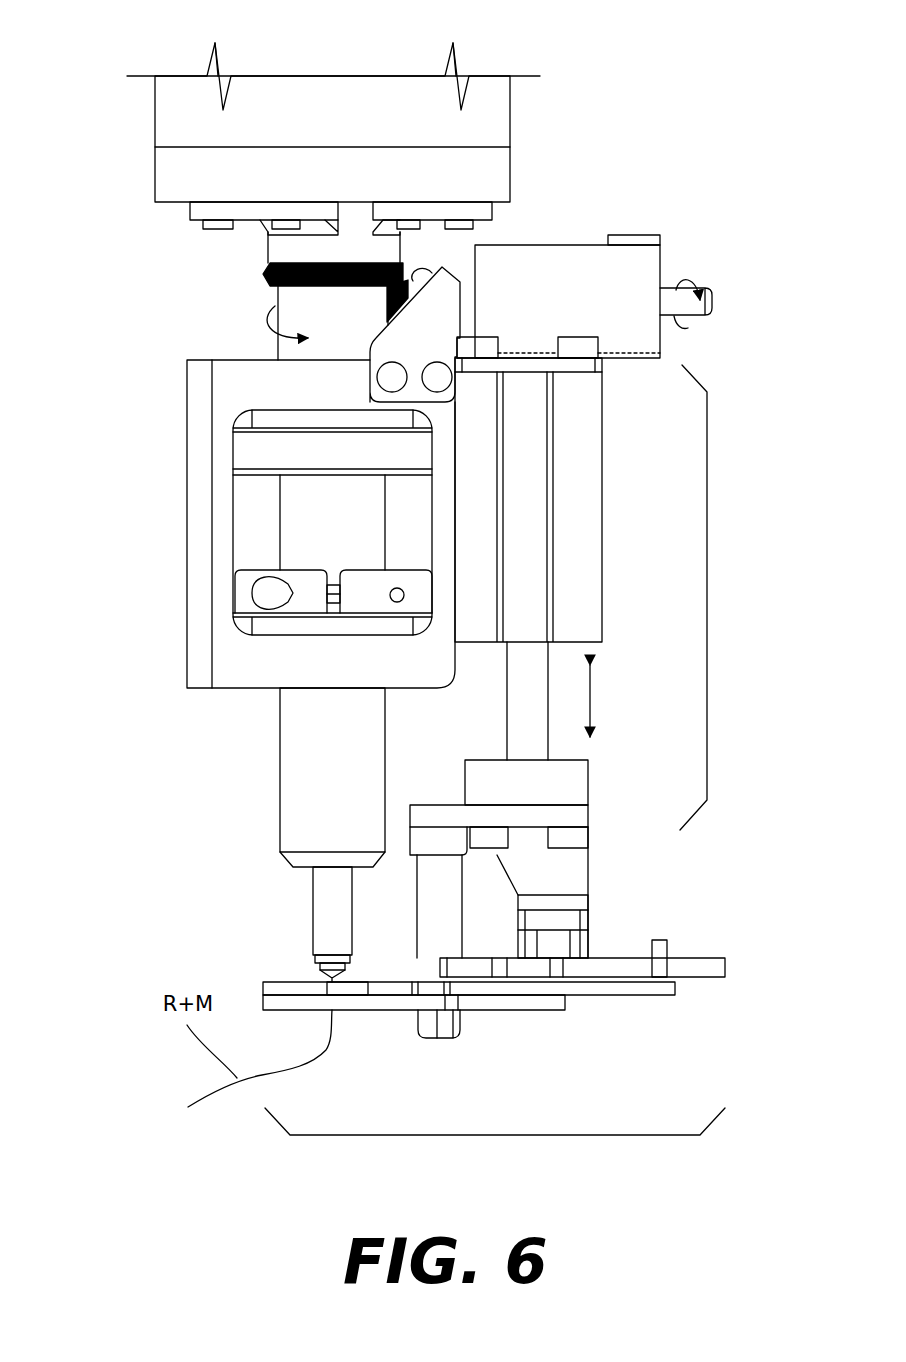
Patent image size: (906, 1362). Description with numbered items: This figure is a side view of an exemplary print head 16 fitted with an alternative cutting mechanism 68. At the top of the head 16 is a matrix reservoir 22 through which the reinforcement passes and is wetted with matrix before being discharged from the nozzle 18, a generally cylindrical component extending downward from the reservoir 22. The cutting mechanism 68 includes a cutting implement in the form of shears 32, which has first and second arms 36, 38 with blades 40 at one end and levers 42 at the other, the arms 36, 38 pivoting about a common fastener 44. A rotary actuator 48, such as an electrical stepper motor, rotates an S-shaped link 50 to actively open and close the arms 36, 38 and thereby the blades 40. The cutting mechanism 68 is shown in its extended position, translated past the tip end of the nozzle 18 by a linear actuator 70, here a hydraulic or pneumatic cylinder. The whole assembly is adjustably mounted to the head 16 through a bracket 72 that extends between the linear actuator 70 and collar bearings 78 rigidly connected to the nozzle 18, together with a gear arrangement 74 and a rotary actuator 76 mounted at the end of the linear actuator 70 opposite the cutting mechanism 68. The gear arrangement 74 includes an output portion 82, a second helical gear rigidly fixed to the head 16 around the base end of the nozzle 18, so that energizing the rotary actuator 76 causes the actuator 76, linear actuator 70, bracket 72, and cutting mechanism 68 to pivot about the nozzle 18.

The head 16 is at (136, 62).
The matrix reservoir 22 is at (348, 115).
The gear arrangement 74 is at (241, 287).
The output portion 82 is at (303, 286).
The rotary actuator 76 is at (555, 309).
The collar bearings 78 is at (303, 452).
The bracket 72 is at (391, 674).
The linear actuator 70 is at (707, 593).
The rotary actuator 48 is at (588, 877).
The link 50 is at (610, 958).
The nozzle 18 is at (313, 895).
The blade 40 is at (350, 1010).
The fastener 44 is at (452, 1038).
The lever 42 is at (520, 1010).
The second arm 38 is at (567, 1001).
The first arm 36 is at (677, 988).
The shears 32 is at (499, 1021).
The cutting mechanism 68 is at (490, 1135).